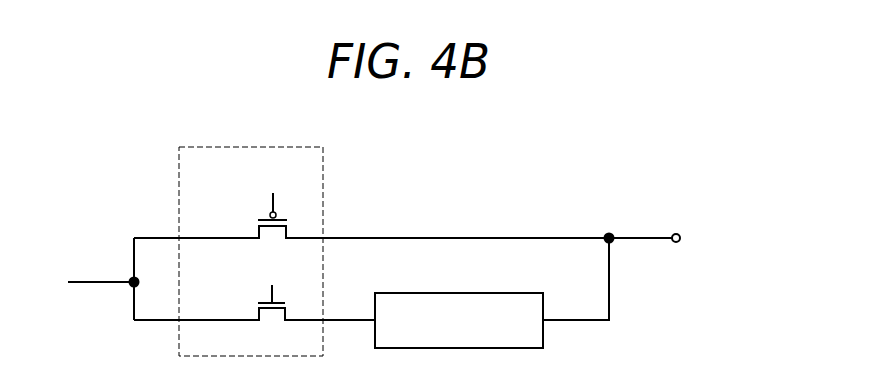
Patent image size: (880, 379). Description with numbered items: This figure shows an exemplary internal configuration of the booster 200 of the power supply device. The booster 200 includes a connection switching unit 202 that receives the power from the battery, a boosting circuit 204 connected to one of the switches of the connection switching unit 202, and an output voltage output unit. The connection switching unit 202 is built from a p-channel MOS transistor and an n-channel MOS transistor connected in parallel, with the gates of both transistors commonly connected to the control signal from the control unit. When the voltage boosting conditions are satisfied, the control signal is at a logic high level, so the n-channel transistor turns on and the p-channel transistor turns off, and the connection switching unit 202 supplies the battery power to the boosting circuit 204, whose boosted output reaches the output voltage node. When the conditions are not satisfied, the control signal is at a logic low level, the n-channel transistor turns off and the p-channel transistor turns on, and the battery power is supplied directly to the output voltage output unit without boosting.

The booster 200 is at (469, 156).
The connection switching unit 202 is at (323, 155).
The boosting circuit 204 is at (520, 280).